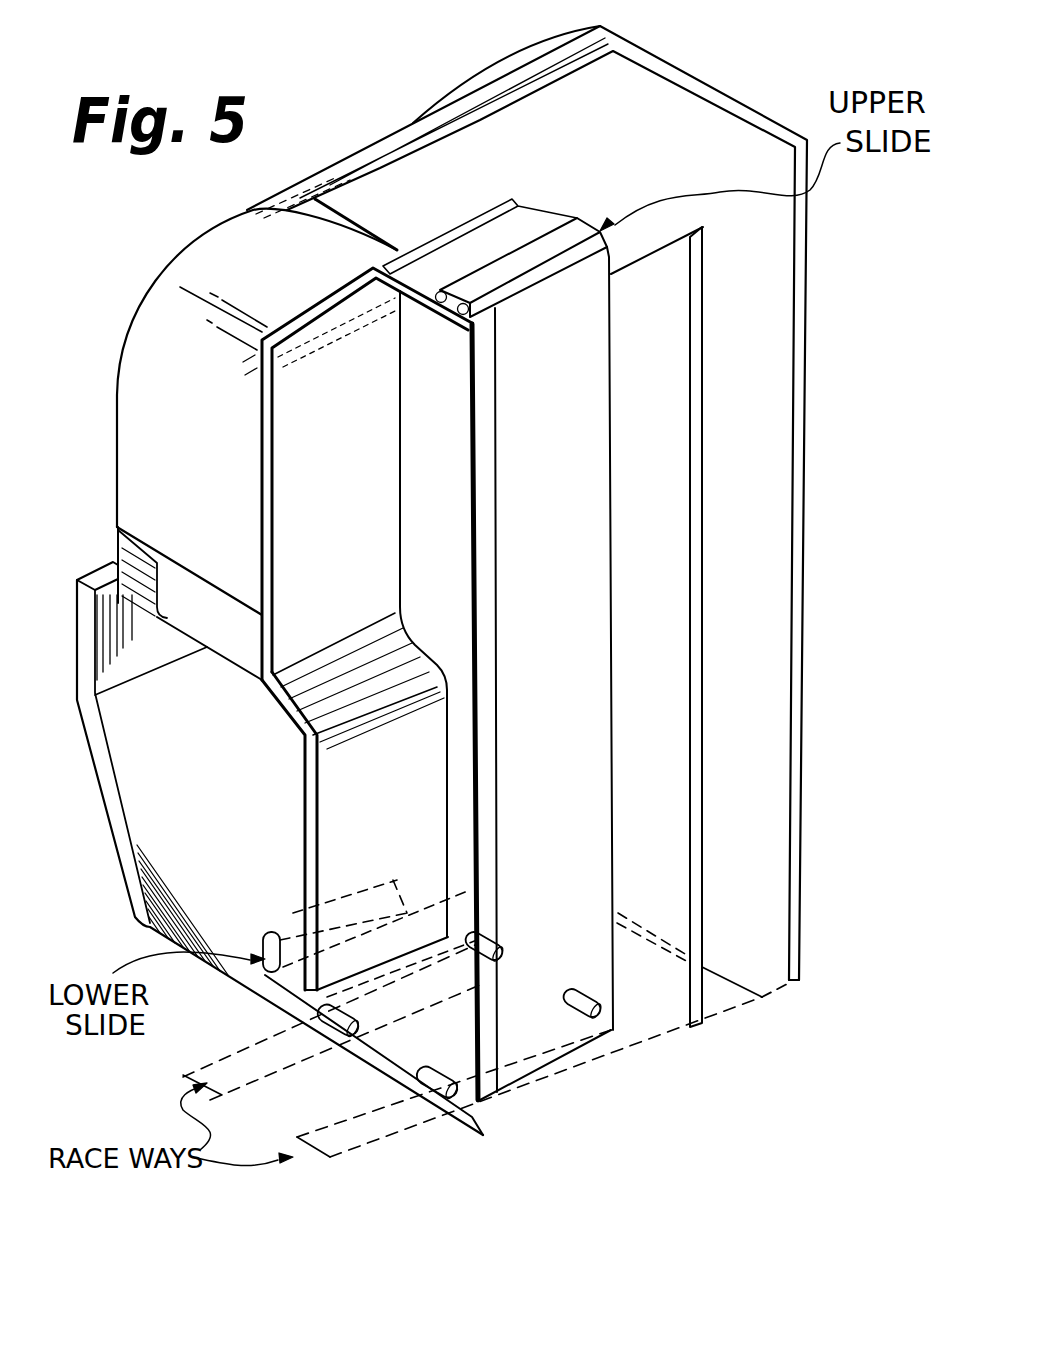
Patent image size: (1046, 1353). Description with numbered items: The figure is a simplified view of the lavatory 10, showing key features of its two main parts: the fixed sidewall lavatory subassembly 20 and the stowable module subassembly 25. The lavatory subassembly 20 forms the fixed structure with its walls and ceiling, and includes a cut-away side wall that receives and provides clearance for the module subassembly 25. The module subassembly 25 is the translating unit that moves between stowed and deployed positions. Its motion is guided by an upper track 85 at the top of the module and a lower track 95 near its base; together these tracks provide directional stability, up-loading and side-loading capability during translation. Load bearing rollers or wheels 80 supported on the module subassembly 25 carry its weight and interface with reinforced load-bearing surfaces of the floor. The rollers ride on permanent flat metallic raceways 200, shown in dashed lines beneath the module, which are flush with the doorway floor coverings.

The lavatory 10 is at (304, 120).
The fixed sidewall lavatory subassembly 20 is at (428, 75).
The stowable module subassembly 25 is at (310, 432).
The upper track 85 is at (520, 240).
The lower track 95 is at (353, 893).
The load bearing rollers or wheels 80 is at (485, 1115).
The raceways 200 is at (317, 1163).